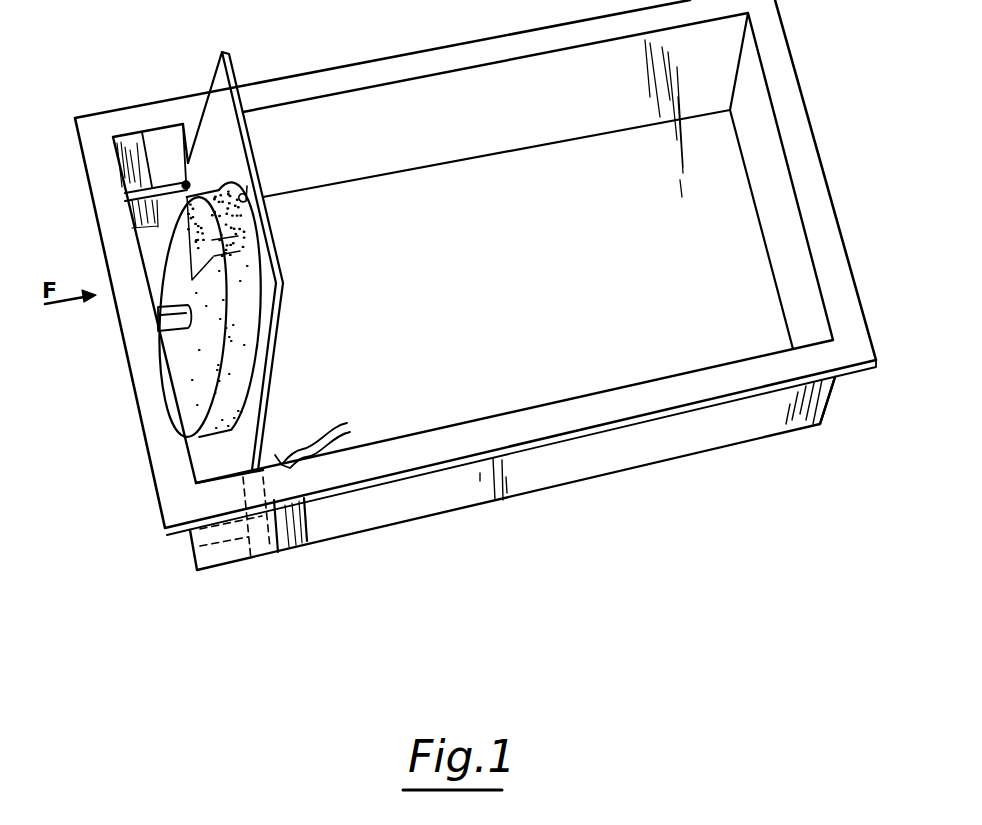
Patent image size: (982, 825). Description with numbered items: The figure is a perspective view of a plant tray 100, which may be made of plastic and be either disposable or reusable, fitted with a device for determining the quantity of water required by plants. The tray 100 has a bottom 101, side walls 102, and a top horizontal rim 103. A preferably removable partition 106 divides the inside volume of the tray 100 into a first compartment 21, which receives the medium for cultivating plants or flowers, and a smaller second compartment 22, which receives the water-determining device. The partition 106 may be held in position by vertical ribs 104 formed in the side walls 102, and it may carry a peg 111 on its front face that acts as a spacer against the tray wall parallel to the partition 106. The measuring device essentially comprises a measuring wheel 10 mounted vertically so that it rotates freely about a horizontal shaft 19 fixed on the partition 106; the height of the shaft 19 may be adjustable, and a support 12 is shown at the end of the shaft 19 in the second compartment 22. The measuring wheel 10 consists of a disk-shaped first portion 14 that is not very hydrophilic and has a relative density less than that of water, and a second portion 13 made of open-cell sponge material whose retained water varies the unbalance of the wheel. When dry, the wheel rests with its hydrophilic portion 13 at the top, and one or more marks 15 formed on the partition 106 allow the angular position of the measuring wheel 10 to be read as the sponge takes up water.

The measuring wheel 10 is at (155, 312).
The support bracket 12 is at (150, 124).
The second portion 13 is at (227, 190).
The first portion 14 is at (187, 373).
The marks 15 is at (240, 197).
The horizontal shaft 19 is at (157, 323).
The first compartment 21 is at (471, 293).
The second compartment 22 is at (197, 455).
The plant tray 100 is at (545, 503).
The bottom 101 is at (601, 275).
The side walls 102 is at (826, 432).
The top horizontal rim 103 is at (813, 130).
The vertical ribs 104 is at (192, 124).
The partition 106 is at (277, 350).
The peg 111 is at (240, 572).